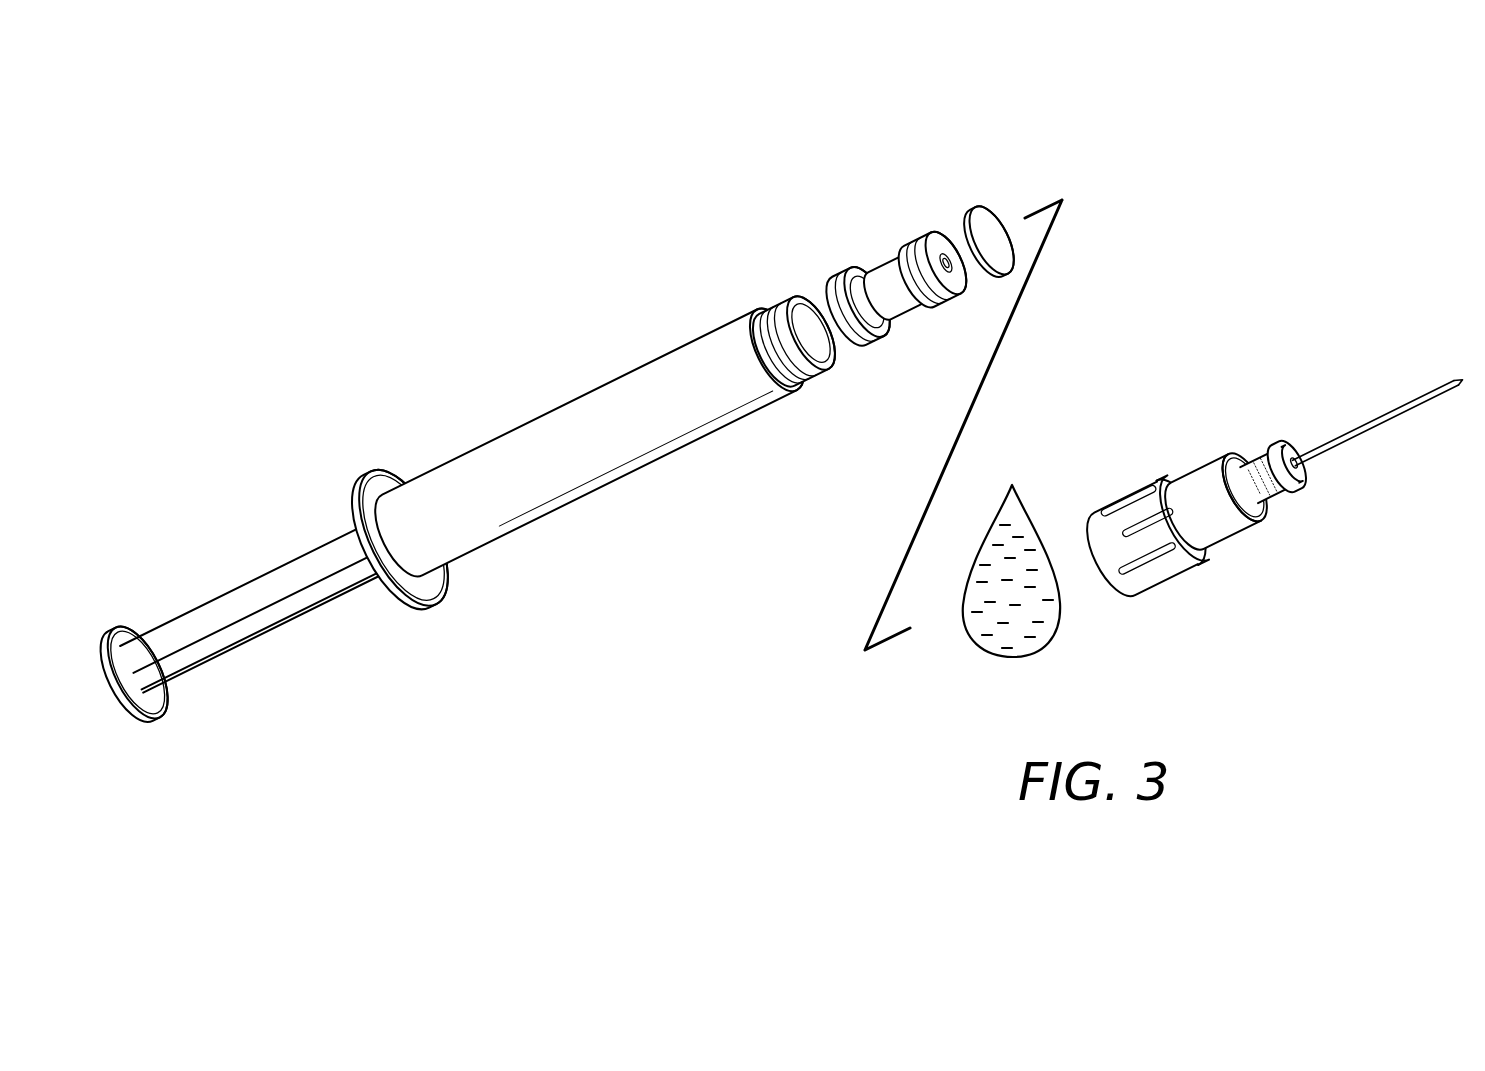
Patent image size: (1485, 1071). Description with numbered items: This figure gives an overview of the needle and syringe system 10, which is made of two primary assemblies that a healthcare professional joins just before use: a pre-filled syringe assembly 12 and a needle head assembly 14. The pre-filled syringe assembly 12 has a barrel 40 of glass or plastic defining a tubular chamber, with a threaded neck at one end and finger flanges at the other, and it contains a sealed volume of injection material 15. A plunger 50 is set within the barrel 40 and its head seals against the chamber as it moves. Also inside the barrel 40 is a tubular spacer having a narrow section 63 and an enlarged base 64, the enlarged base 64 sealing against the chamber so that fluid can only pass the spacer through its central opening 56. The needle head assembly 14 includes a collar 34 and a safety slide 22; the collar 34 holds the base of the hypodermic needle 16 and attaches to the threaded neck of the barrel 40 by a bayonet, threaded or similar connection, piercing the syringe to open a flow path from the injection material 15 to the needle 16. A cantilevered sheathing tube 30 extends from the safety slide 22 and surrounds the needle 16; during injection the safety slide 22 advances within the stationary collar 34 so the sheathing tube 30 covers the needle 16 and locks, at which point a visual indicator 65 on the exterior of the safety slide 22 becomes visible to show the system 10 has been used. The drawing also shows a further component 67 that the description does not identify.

The needle and syringe system 10 is at (1180, 150).
The pre-filled syringe assembly 12 is at (963, 192).
The needle head assembly 14 is at (1113, 387).
The injection material 15 is at (1028, 525).
The hypodermic needle 16 is at (1458, 376).
The safety slide 22 is at (1272, 458).
The sheathing tube 30 is at (1327, 440).
The collar 34 is at (1188, 490).
The barrel 40 is at (487, 478).
The plunger 50 is at (228, 612).
The central opening 56 is at (947, 257).
The narrow section 63 is at (963, 296).
The enlarged base 64 is at (843, 280).
The visual indicator 65 is at (1285, 493).
The cap disc 67 is at (988, 220).